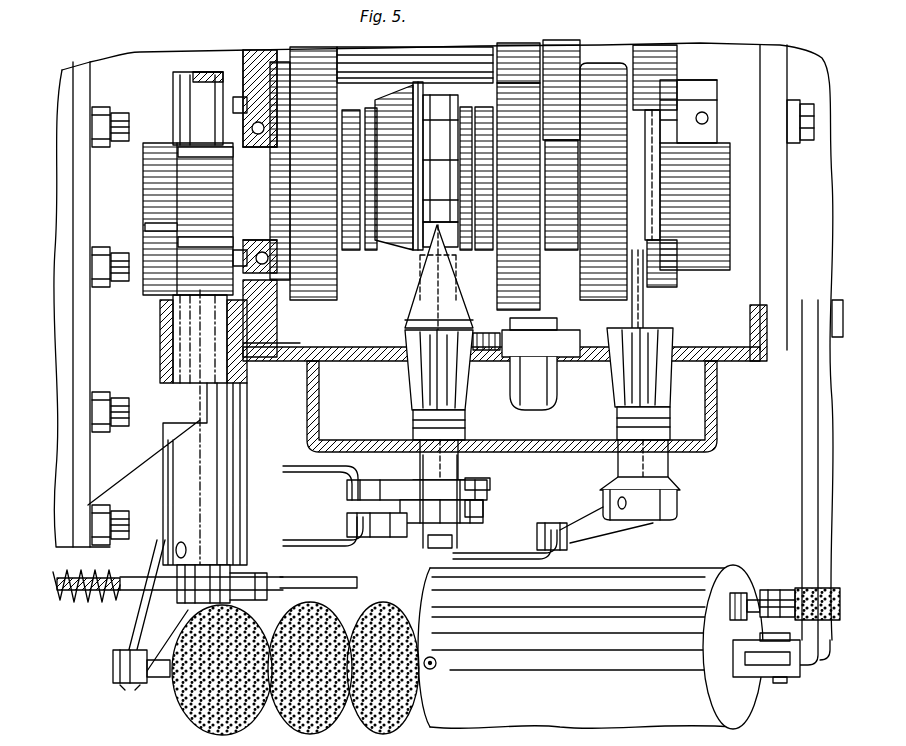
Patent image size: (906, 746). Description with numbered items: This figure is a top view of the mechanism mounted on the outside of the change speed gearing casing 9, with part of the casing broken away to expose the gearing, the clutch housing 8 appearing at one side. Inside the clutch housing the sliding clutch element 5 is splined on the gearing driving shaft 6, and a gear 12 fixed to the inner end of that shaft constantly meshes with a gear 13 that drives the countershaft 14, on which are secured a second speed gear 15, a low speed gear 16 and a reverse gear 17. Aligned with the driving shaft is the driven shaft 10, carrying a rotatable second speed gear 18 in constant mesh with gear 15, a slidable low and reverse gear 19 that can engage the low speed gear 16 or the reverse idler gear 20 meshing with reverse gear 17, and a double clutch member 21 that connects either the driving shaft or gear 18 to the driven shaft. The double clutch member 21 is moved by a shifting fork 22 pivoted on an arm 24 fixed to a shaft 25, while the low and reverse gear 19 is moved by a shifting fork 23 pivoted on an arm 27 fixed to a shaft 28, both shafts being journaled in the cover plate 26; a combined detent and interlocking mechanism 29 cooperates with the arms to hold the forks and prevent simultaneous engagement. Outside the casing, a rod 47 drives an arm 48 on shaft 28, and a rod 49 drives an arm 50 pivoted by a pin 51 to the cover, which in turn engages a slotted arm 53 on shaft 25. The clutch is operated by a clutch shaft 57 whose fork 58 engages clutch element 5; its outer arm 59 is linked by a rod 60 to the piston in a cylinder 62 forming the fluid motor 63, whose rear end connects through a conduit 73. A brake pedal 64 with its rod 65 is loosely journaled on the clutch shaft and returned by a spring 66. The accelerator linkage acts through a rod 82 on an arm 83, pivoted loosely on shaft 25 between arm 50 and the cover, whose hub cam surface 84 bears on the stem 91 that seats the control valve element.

The clutch element 5 is at (162, 145).
The gearing driving shaft 6 is at (225, 197).
The clutch housing 8 is at (68, 82).
The change speed gearing casing 9 is at (742, 36).
The driven shaft 10 is at (705, 197).
The gear 12 is at (305, 103).
The gear 13 is at (313, 53).
The countershaft 14 is at (446, 95).
The second speed gear 15 is at (517, 57).
The low speed gear 16 is at (562, 50).
The reverse gear 17 is at (657, 57).
The second speed gear 18 is at (510, 83).
The low and reverse gear 19 is at (607, 80).
The reverse idler gear 20 is at (680, 283).
The double clutch member 21 is at (435, 93).
The shifting fork 22 is at (413, 312).
The shifting fork 23 is at (643, 307).
The arm 24 is at (487, 337).
The shaft 25 is at (420, 383).
The cover plate 26 is at (717, 423).
The arm 27 is at (593, 337).
The shaft 28 is at (657, 523).
The combined detent and interlocking mechanism 29 is at (567, 381).
The rod 47 is at (513, 555).
The arm 48 is at (597, 507).
The rod 49 is at (307, 543).
The arm 50 is at (377, 527).
The pin 51 is at (440, 548).
The arm 53 is at (483, 507).
The clutch shaft 57 is at (197, 365).
The fork 58 is at (167, 253).
The arm 59 is at (147, 633).
The rod 60 is at (163, 683).
The cylinder 62 is at (635, 587).
The fluid motor 63 is at (775, 721).
The brake pedal 64 is at (143, 580).
The rod 65 is at (333, 578).
The spring 66 is at (78, 603).
The conduit 73 is at (807, 590).
The rod 82 is at (300, 478).
The arm 83 is at (380, 490).
The cam surface 84 is at (467, 473).
The stem 91 is at (493, 477).